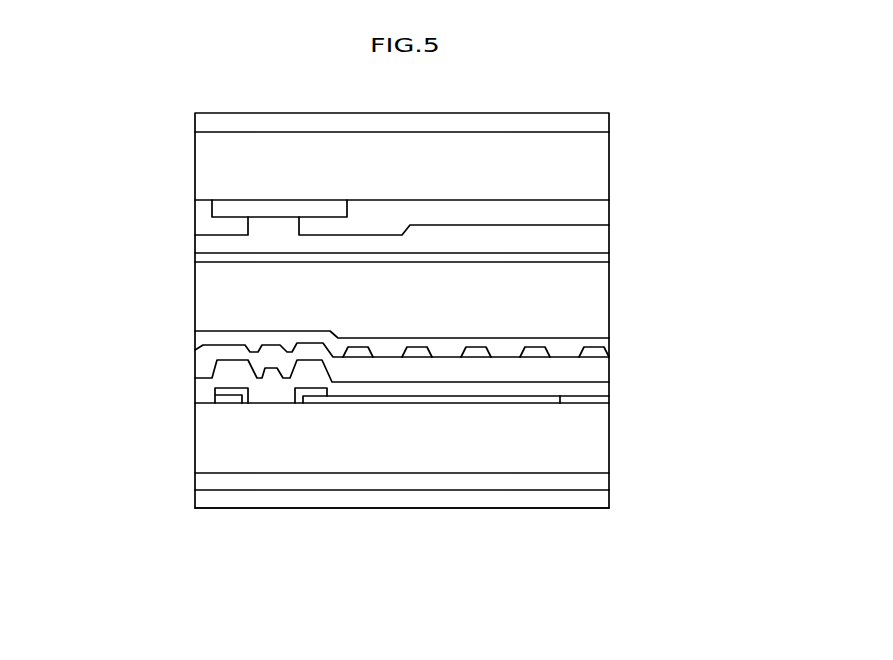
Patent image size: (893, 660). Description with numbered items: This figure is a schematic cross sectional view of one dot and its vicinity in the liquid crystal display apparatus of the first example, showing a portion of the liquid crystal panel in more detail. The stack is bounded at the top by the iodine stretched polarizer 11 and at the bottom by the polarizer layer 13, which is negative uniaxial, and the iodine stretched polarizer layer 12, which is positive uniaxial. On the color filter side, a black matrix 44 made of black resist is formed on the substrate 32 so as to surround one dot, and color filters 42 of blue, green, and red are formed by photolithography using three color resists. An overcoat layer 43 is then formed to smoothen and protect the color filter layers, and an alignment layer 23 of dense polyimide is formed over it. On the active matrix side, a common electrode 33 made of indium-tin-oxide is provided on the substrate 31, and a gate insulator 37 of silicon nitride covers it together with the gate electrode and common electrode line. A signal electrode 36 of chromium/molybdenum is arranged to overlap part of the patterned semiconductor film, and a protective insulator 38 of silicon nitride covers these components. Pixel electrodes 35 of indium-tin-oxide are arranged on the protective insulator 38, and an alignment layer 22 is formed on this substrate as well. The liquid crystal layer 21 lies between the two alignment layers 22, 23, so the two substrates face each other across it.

The iodine stretched polarizer 11 is at (582, 125).
The substrate 32 is at (587, 165).
The color filters 42 is at (587, 210).
The overcoat layer 43 is at (587, 233).
The black matrix 44 is at (248, 212).
The alignment layer 23 is at (198, 253).
The liquid crystal layer 21 is at (587, 295).
The alignment layer 22 is at (203, 331).
The pixel electrode (source electrode) 35 is at (600, 350).
The signal electrode (drain electrode) 36 is at (197, 377).
The protective insulator 38 is at (587, 366).
The gate insulator 37 is at (587, 388).
The common electrode 33 is at (577, 400).
The substrate 31 is at (225, 433).
The polarizer layer 13 is at (215, 480).
The iodine stretched polarizer layer 12 is at (238, 502).